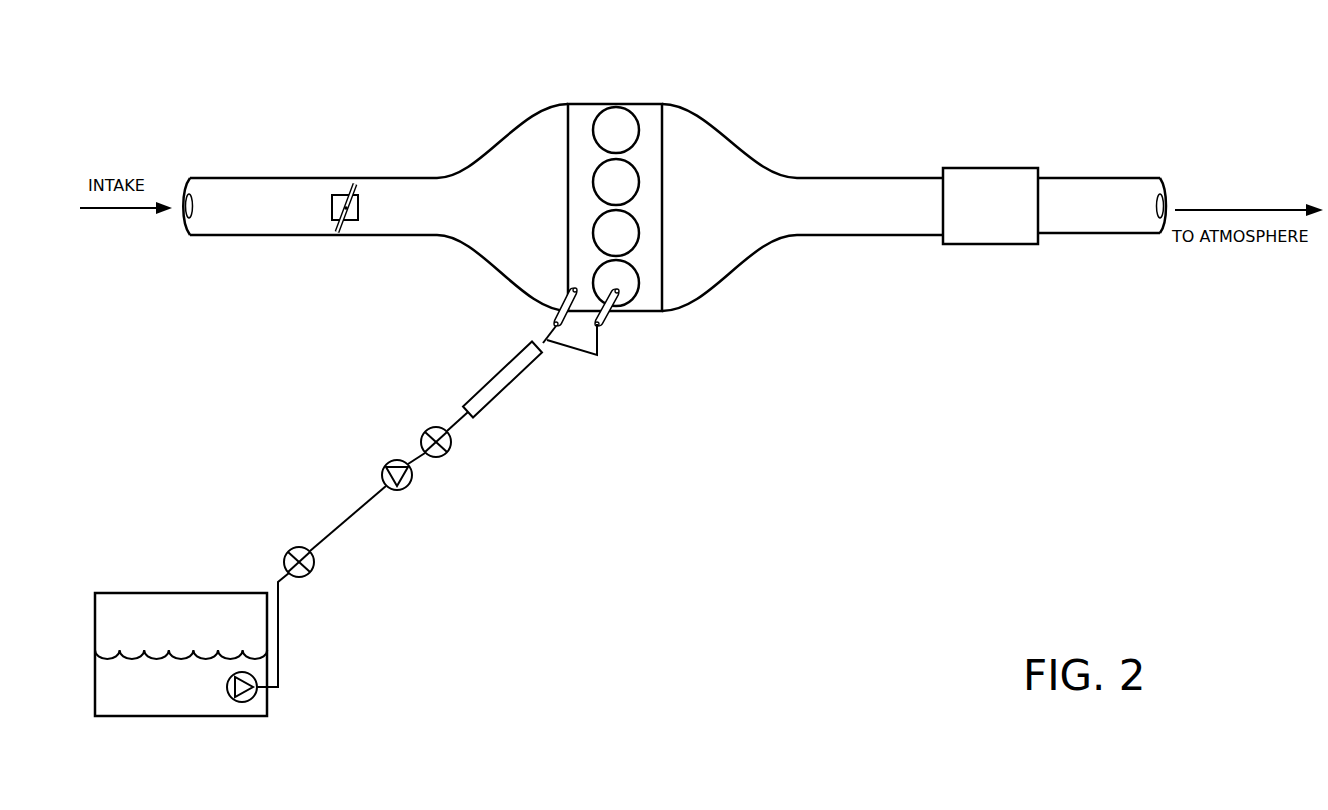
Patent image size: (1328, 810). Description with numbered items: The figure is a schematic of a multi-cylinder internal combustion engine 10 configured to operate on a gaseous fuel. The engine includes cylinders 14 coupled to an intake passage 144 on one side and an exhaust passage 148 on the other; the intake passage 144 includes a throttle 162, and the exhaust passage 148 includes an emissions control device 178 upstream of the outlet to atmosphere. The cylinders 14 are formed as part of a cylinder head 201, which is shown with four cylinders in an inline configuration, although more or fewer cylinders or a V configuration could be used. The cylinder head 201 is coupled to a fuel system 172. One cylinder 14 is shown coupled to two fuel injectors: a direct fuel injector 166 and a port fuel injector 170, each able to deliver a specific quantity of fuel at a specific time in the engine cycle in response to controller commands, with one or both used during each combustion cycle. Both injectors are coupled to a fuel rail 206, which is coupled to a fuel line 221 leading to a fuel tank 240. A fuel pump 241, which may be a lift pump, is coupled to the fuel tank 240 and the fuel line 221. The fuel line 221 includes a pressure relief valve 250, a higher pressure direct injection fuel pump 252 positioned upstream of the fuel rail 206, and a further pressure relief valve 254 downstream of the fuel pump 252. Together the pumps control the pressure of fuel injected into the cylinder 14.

The internal combustion engine 10 is at (674, 169).
The cylinder 14 is at (638, 277).
The intake passage 144 is at (312, 217).
The exhaust passage 148 is at (757, 217).
The throttle 162 is at (358, 215).
The direct fuel injector 166 is at (606, 316).
The port fuel injector 170 is at (552, 316).
The fuel system 172 is at (330, 388).
The emissions control device 178 is at (1006, 215).
The cylinder head 201 is at (634, 207).
The fuel rail 206 is at (462, 406).
The fuel line 221 is at (341, 522).
The fuel tank 240 is at (94, 706).
The fuel pump 241 is at (229, 679).
The pressure relief valve 250 is at (308, 577).
The higher pressure direct injection fuel pump 252 is at (386, 461).
The pressure relief valve 254 is at (446, 455).